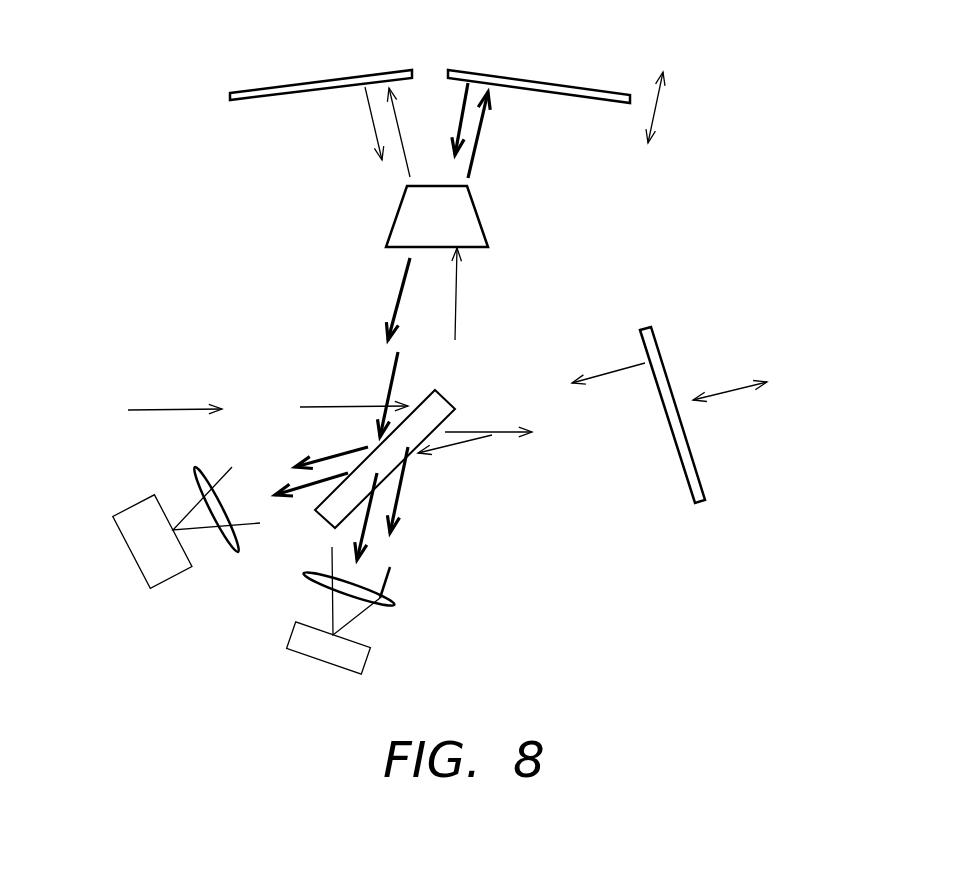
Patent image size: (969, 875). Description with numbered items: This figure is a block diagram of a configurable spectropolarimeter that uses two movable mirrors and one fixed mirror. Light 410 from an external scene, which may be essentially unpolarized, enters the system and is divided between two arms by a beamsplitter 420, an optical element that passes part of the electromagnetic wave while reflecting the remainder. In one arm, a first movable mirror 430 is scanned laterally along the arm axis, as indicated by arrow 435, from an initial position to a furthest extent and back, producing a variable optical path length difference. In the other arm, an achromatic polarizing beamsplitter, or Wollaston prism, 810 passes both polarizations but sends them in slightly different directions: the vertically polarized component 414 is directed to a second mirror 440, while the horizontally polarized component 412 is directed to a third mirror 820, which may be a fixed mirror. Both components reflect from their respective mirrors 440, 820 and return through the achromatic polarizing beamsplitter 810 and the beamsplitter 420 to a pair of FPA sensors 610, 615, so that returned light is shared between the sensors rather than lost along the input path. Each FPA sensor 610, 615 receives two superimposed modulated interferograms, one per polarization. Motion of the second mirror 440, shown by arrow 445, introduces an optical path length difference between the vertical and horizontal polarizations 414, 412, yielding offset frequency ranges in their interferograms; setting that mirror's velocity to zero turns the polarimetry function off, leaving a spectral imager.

The light 410 is at (153, 408).
The horizontally polarized component 412 is at (377, 125).
The vertically polarized component 414 is at (478, 138).
The beamsplitter 420 is at (448, 397).
The first movable mirror 430 is at (653, 330).
The arrow 435 is at (740, 392).
The second mirror 440 is at (480, 73).
The arrow 445 is at (655, 113).
The FPA sensor 610 is at (370, 648).
The FPA sensor 615 is at (133, 507).
The achromatic polarizing beamsplitter 810 is at (485, 232).
The third mirror 820 is at (288, 88).